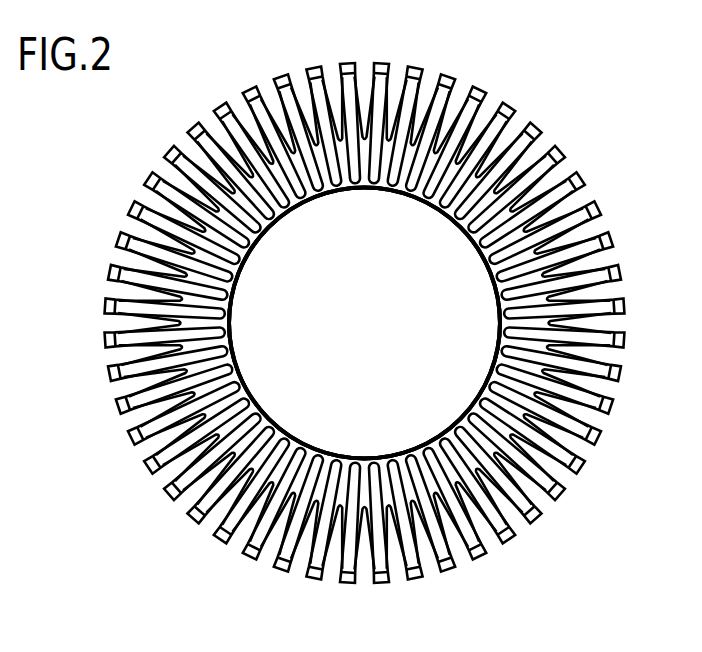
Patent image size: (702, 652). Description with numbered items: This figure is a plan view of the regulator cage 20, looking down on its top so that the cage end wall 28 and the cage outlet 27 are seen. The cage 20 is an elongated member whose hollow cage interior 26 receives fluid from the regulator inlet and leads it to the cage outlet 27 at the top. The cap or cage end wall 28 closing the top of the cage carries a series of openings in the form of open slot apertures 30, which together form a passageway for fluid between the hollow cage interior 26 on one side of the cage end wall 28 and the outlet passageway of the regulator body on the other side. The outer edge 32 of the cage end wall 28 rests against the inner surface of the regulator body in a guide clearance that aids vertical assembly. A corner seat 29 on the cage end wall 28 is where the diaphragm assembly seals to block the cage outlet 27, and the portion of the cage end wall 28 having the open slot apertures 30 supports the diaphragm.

The cage 20 is at (220, 67).
The hollow cage interior 26 is at (418, 270).
The cage outlet 27 is at (468, 408).
The cage end wall 28 is at (433, 105).
The corner seat 29 is at (291, 221).
The open slot apertures 30 is at (580, 198).
The outer edge 32 is at (106, 341).